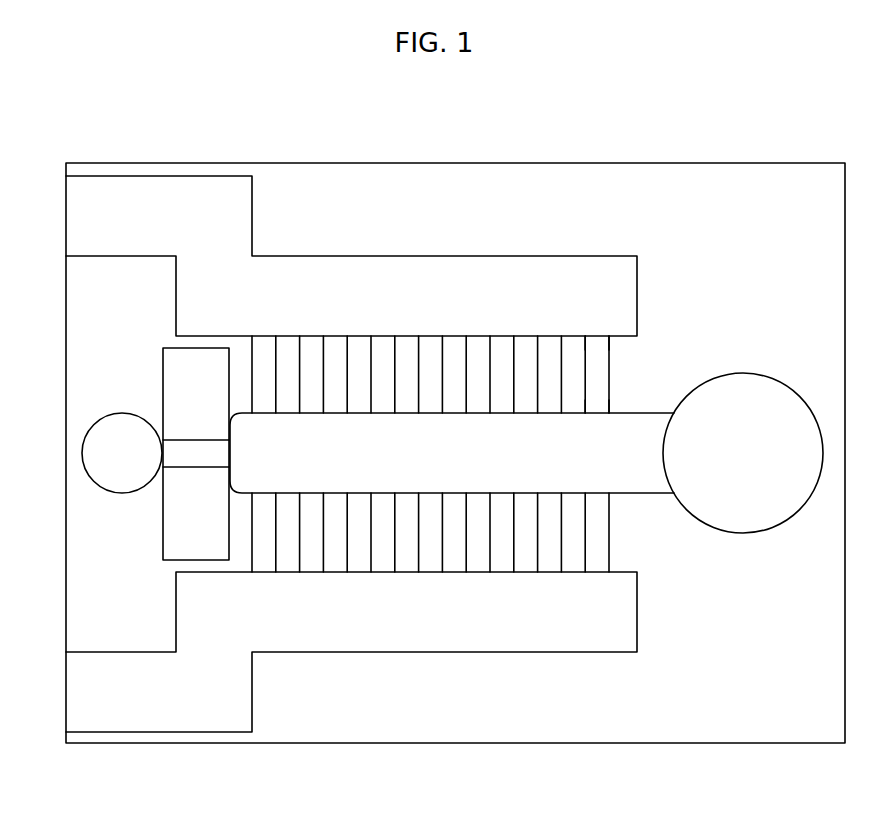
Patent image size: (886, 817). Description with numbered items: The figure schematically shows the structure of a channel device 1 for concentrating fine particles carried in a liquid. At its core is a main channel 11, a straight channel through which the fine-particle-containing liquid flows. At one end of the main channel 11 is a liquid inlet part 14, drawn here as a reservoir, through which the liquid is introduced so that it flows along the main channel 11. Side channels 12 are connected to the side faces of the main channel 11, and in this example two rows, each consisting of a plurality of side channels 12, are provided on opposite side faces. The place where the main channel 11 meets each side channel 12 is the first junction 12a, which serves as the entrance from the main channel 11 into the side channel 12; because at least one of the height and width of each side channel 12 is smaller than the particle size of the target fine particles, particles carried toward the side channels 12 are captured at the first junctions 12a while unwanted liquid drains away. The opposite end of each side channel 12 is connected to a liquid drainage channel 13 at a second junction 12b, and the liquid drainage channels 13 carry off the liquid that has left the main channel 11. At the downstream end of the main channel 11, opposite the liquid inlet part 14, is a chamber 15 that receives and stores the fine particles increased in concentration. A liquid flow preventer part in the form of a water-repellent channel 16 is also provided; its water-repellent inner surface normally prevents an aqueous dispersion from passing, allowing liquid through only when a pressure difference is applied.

The channel device 1 is at (800, 141).
The main channel 11 is at (664, 411).
The side channels 12 is at (609, 348).
The first junction 12a is at (595, 411).
The second junction 12b is at (598, 336).
The liquid drainage channels 13 is at (610, 254).
The liquid inlet part 14 is at (787, 520).
The chamber 15 is at (93, 426).
The water-repellent channel 16 is at (192, 440).